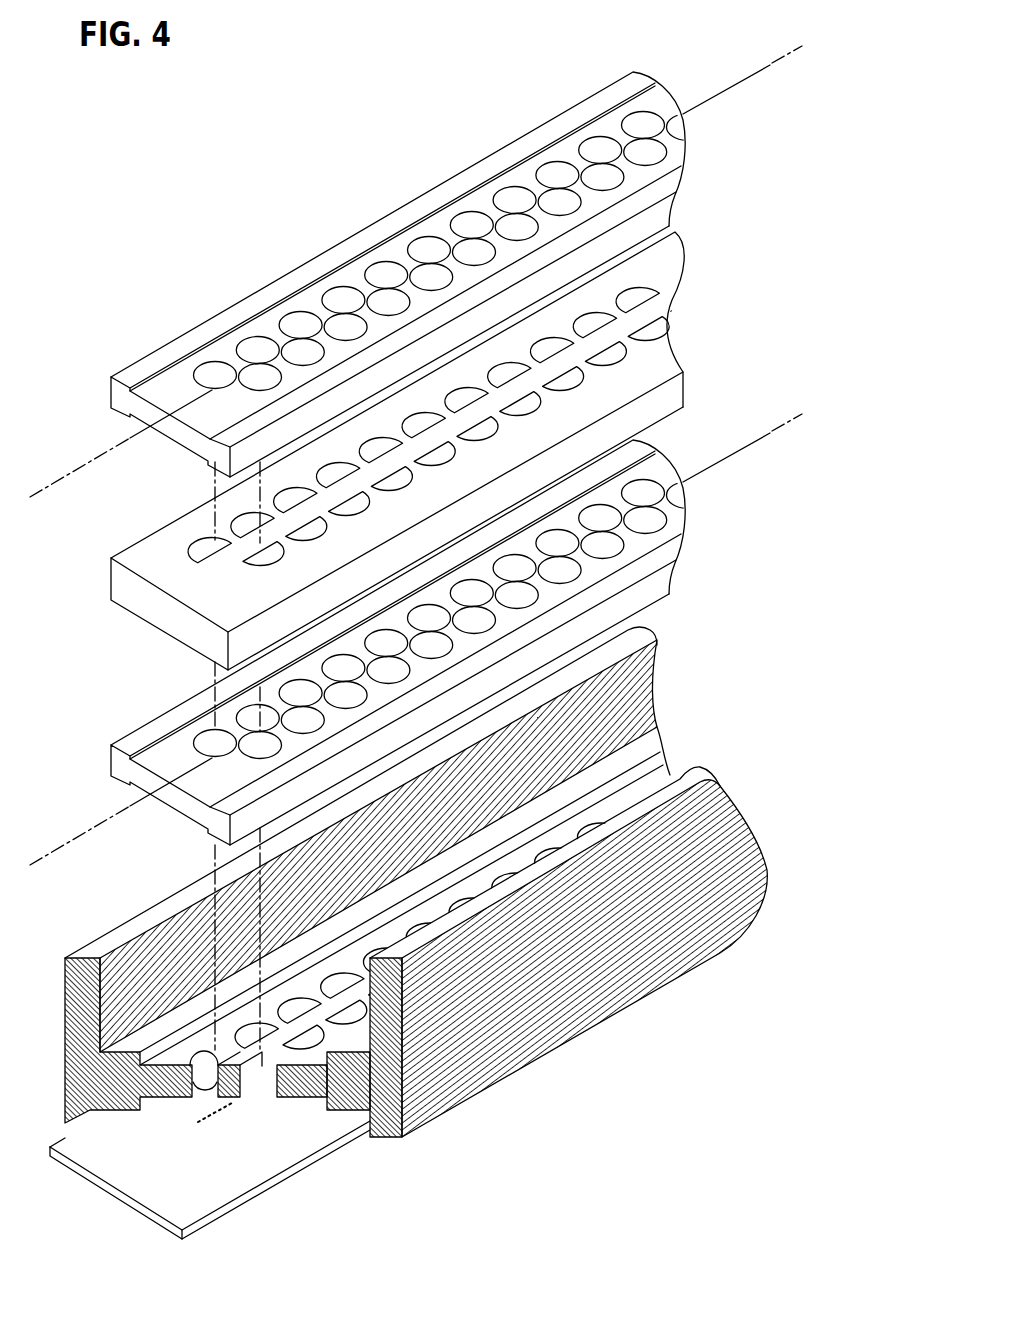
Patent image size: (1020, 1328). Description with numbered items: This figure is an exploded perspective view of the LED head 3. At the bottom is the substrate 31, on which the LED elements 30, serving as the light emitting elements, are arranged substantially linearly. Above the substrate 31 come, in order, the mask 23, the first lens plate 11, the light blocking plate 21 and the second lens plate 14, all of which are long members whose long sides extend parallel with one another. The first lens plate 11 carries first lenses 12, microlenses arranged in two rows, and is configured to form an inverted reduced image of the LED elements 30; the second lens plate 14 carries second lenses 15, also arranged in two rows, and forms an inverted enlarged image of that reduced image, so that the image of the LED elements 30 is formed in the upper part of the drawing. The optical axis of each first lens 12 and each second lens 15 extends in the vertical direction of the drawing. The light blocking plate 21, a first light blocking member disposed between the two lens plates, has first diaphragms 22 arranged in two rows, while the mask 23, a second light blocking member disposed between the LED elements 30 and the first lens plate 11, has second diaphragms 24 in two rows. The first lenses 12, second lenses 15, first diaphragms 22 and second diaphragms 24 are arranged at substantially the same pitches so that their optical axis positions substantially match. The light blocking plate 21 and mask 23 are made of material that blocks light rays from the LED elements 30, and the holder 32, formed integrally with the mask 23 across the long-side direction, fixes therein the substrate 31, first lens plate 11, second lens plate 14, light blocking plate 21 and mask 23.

The LED head 3 is at (118, 160).
The first lens plate 11 is at (145, 735).
The first lenses 12 is at (212, 736).
The second lens plate 14 is at (143, 360).
The second lenses 15 is at (212, 366).
The light blocking plate 21 is at (143, 553).
The first diaphragms 22 is at (203, 540).
The mask 23 is at (290, 1092).
The second diaphragms 24 is at (342, 1092).
The LED elements 30 is at (218, 1112).
The substrate 31 is at (62, 1138).
The holder 32 is at (130, 938).